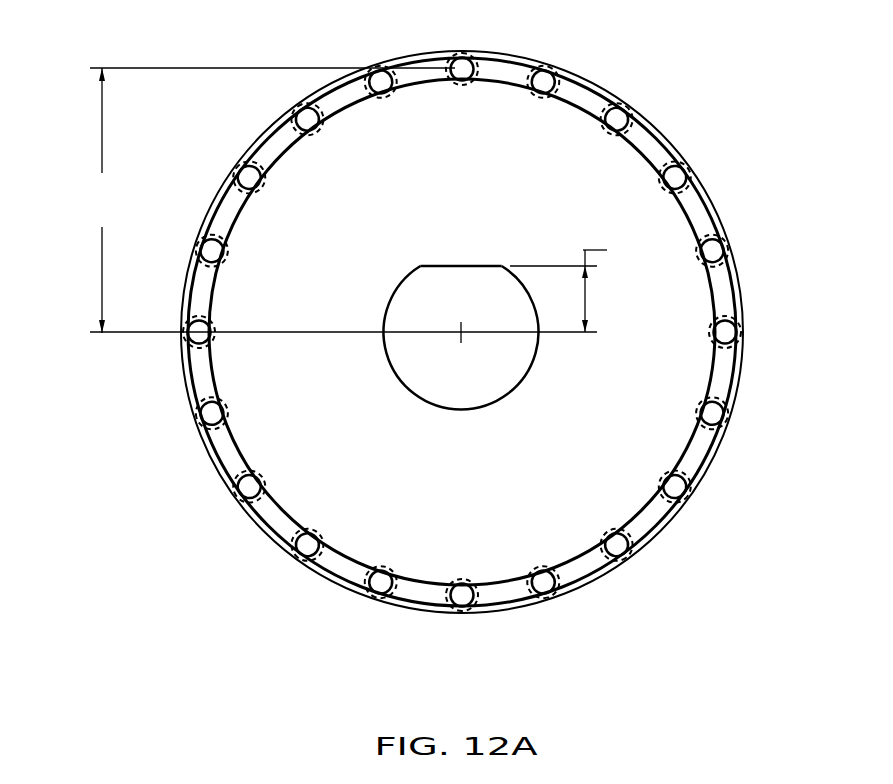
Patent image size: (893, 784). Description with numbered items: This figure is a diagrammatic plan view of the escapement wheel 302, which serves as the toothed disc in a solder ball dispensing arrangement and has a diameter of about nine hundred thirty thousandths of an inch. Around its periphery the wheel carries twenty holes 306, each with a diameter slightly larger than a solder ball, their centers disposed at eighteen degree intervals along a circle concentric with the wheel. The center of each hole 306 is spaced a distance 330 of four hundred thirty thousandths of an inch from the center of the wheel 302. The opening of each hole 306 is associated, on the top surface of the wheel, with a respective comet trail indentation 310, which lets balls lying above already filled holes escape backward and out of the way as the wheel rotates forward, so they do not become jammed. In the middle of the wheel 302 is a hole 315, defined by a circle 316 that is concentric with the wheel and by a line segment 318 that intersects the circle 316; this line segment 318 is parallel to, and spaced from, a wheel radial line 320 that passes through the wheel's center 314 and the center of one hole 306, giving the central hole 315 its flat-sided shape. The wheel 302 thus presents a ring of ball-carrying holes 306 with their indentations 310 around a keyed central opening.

The escapement wheel 302 is at (743, 350).
The holes 306 is at (462, 69).
The comet trail indentation 310 is at (421, 72).
The wheel's center 314 is at (460, 337).
The hole 315 is at (483, 393).
The circle 316 is at (533, 365).
The line segment 318 is at (478, 266).
The wheel radial line 320 is at (307, 331).
The distance 330 is at (102, 143).